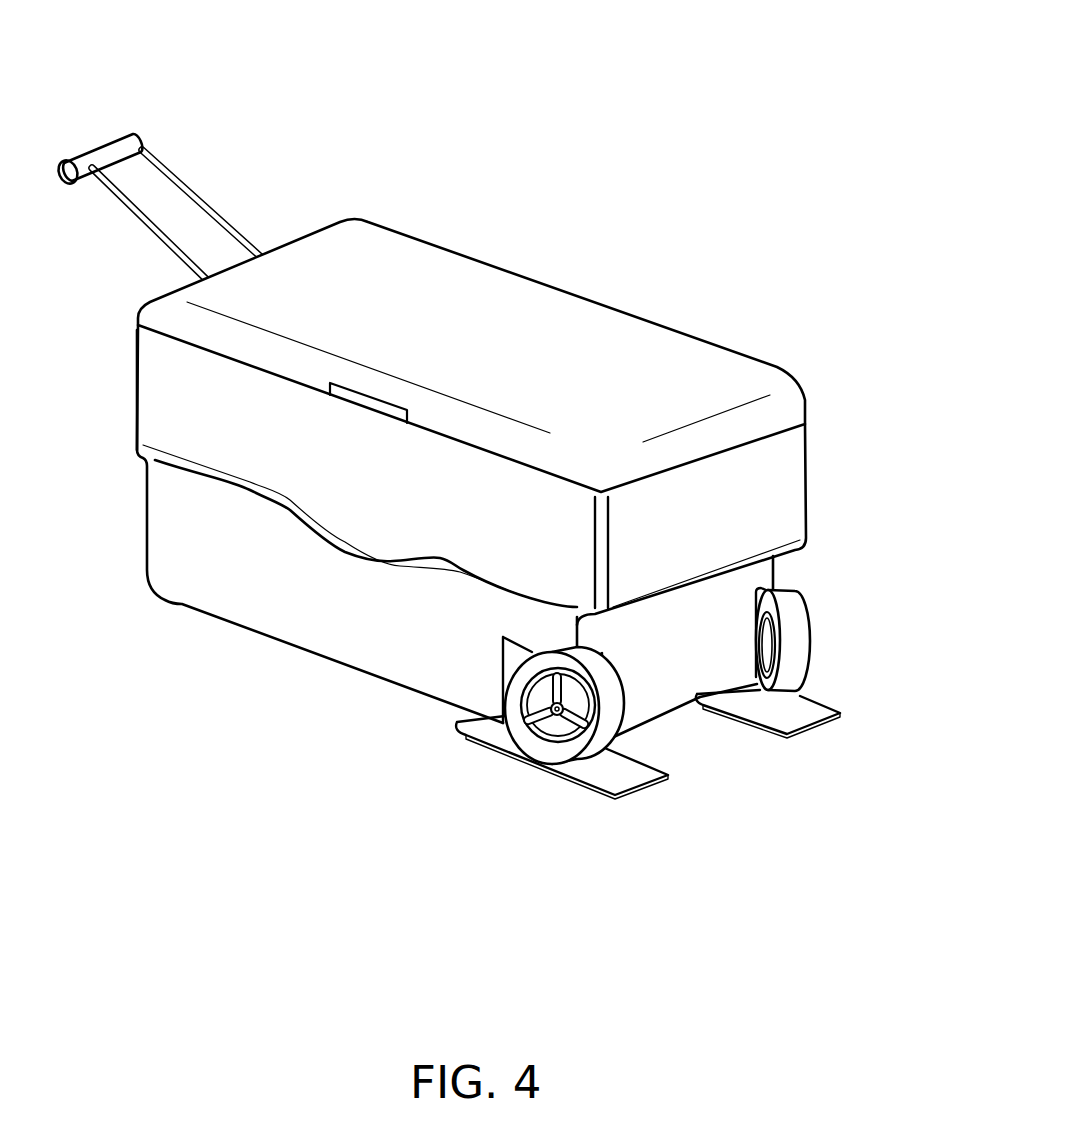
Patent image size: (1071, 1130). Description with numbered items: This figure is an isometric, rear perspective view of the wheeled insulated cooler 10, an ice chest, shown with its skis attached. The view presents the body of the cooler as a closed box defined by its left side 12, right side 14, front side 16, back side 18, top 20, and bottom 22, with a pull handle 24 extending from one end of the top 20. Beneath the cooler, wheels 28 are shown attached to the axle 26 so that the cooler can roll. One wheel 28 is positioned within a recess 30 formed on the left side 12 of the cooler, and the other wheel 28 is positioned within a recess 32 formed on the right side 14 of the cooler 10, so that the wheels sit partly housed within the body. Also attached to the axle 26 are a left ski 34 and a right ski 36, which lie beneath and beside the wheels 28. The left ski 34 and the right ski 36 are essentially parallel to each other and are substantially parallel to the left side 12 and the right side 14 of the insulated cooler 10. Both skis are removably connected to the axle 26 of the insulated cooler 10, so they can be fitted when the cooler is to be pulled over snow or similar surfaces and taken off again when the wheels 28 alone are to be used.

The wheeled insulated cooler 10 is at (665, 183).
The left side 12 is at (348, 593).
The right side 14 is at (807, 438).
The front side 16 is at (137, 382).
The back side 18 is at (707, 510).
The top 20 is at (628, 373).
The bottom 22 is at (182, 603).
The handle 24 is at (203, 198).
The axle 26 is at (552, 712).
The wheel 28 is at (790, 625).
The recess 30 is at (503, 640).
The recess 32 is at (757, 610).
The left ski 34 is at (643, 787).
The right ski 36 is at (812, 727).